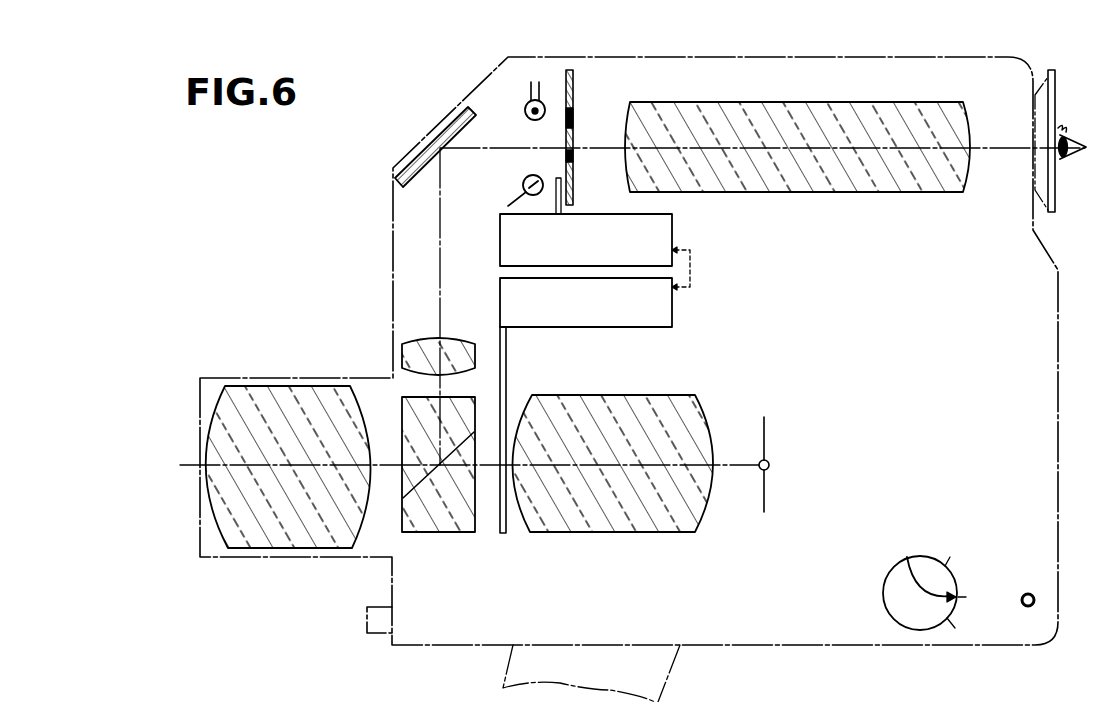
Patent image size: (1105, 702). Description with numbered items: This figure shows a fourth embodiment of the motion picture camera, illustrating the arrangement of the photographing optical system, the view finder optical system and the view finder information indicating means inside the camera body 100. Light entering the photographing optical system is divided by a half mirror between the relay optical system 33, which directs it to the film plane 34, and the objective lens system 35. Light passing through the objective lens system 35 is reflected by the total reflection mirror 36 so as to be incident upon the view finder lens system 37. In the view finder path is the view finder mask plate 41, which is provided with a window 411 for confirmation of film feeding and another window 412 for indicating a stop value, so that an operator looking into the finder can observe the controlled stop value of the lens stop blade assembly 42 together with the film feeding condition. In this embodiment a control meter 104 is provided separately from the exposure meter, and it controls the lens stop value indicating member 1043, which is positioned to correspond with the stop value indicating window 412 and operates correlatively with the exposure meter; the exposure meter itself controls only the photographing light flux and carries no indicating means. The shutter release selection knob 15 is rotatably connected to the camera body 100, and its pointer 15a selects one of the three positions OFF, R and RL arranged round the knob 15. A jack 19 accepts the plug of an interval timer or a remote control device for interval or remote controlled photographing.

The camera body 100 is at (820, 50).
The total reflection mirror 36 is at (450, 118).
The view finder mask plate 41 is at (598, 135).
The film feeding condition checking window 411 is at (574, 110).
The stop value indicating window 412 is at (574, 178).
The view finder lens system 37 is at (872, 100).
The lens stop value indicating member 1043 is at (556, 186).
The control meter 104 is at (666, 226).
The objective lens system 35 is at (419, 345).
The lens stop blade assembly 42 is at (507, 366).
The relay optical system 33 is at (620, 527).
The film plane 34 is at (762, 505).
The shutter release selection knob 15 is at (911, 588).
The pointer 15a is at (907, 558).
The jack 19 is at (1036, 605).